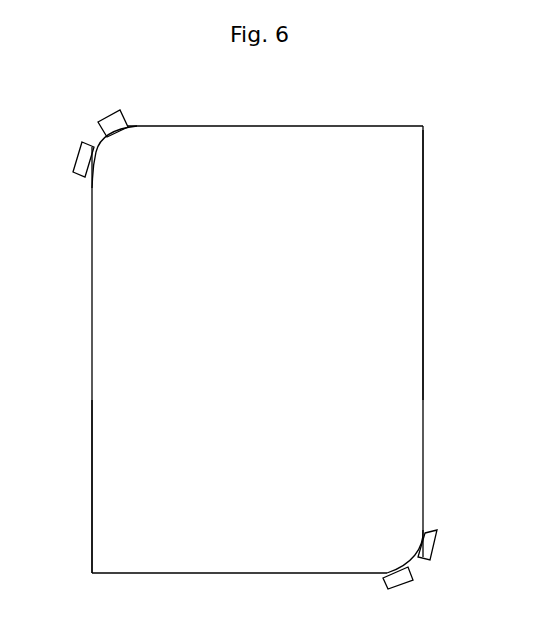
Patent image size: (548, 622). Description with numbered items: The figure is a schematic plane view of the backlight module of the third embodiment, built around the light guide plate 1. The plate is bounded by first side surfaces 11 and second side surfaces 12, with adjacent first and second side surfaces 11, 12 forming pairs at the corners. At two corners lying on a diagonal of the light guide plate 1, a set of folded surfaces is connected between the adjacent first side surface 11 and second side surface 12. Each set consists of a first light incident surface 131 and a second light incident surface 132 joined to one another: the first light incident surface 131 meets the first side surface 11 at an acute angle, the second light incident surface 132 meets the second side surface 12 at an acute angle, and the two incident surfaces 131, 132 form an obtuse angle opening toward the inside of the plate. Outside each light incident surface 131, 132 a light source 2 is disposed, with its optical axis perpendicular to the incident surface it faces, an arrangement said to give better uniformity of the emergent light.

The light guide plate 1 is at (397, 218).
The first side surface 11 is at (257, 126).
The second side surface 12 is at (423, 400).
The first light incident surface 131 is at (130, 124).
The second light incident surface 132 is at (96, 166).
The light source 2 is at (76, 163).